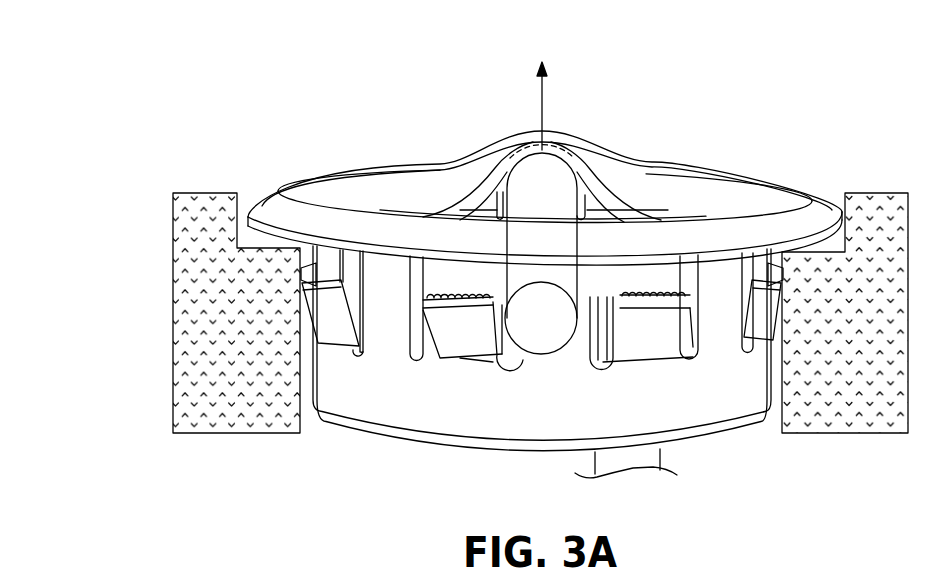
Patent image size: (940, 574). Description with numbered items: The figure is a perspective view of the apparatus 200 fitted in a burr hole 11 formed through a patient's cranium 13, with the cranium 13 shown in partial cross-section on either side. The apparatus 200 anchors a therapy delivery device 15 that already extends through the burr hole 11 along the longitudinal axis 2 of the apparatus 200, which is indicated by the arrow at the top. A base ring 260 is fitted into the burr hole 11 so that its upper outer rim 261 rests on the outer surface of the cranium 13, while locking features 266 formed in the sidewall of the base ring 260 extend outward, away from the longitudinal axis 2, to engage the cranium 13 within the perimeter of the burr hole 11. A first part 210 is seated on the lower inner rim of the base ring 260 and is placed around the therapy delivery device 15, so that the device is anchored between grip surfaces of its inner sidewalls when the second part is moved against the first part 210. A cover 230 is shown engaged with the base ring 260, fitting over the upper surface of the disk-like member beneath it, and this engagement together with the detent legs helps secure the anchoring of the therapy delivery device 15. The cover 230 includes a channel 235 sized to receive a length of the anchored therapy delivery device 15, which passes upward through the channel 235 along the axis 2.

The apparatus 200 is at (658, 62).
The cover 230 is at (641, 150).
The channel 235 is at (500, 195).
The upper outer rim 261 is at (271, 203).
The base ring 260 is at (232, 182).
The locking features 266 is at (757, 300).
The first part 210 is at (631, 286).
The therapy delivery device 15 is at (575, 196).
The cranium 13 is at (197, 265).
The burr hole 11 is at (311, 425).
The longitudinal axis 2 is at (540, 103).